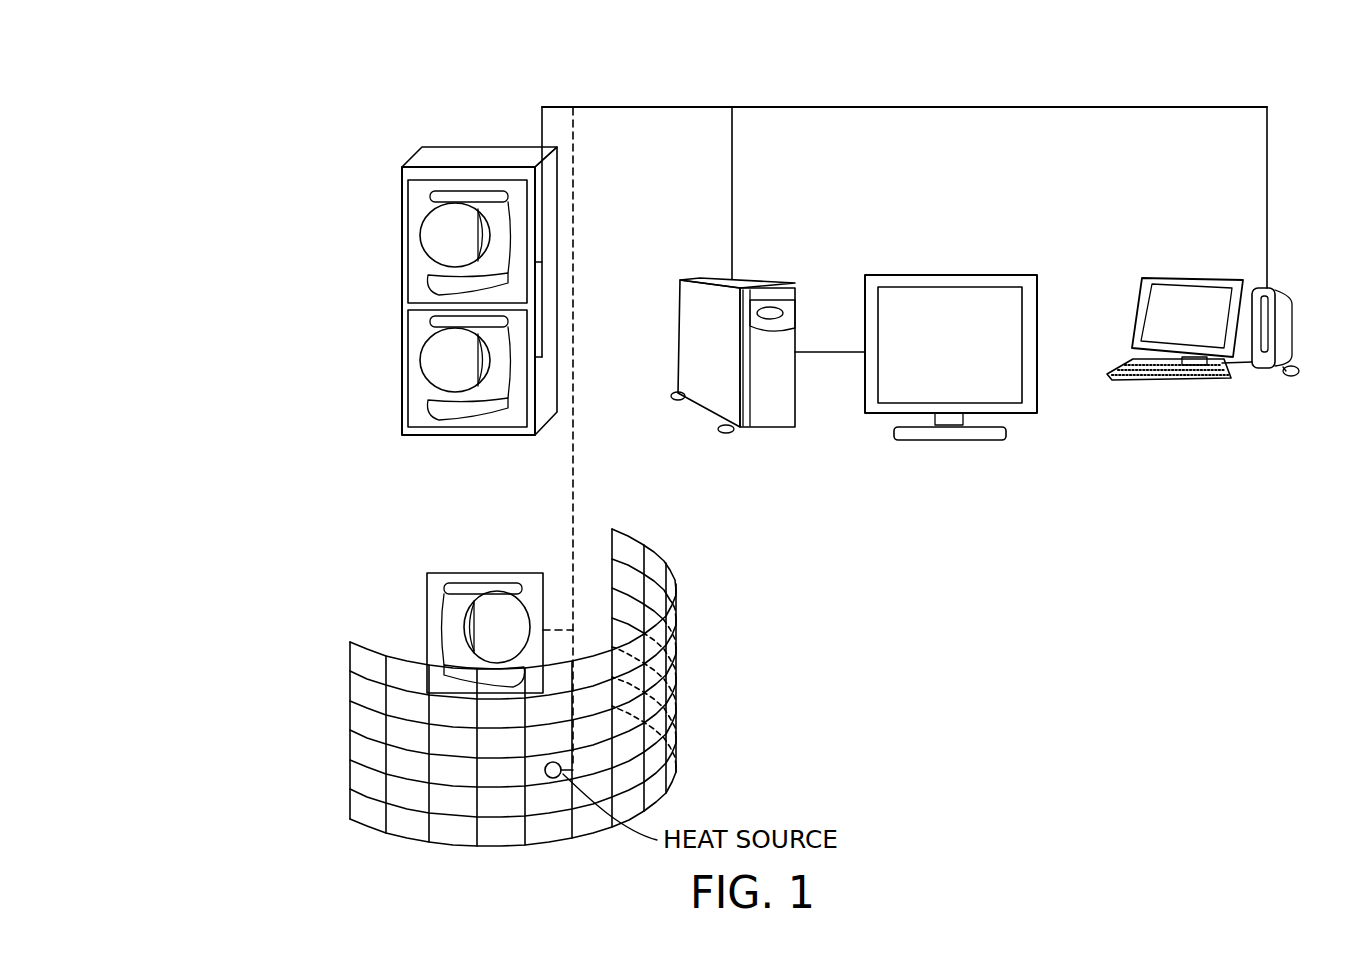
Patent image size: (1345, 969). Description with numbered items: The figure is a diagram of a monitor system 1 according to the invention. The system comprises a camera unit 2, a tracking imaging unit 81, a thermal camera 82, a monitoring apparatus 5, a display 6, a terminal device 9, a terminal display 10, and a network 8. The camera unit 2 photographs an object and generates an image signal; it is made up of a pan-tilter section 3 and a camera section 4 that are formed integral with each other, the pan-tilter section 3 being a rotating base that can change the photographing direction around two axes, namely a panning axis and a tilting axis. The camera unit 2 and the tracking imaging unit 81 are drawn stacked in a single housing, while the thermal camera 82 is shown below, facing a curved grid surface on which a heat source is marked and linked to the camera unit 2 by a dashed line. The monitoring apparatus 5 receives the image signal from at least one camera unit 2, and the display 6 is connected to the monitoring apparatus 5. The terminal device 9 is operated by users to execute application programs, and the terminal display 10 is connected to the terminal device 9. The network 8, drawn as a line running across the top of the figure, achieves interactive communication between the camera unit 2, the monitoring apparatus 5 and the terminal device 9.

The monitor system 1 is at (1022, 78).
The camera unit 2 is at (330, 263).
The pan-tilter section 3 is at (437, 246).
The camera section 4 is at (433, 236).
The monitoring apparatus 5 is at (755, 430).
The display 6 is at (890, 275).
The network 8 is at (1155, 107).
The terminal device 9 is at (1283, 289).
The terminal display 10 is at (1168, 380).
The tracking imaging unit 81 is at (307, 368).
The thermal camera 82 is at (442, 628).